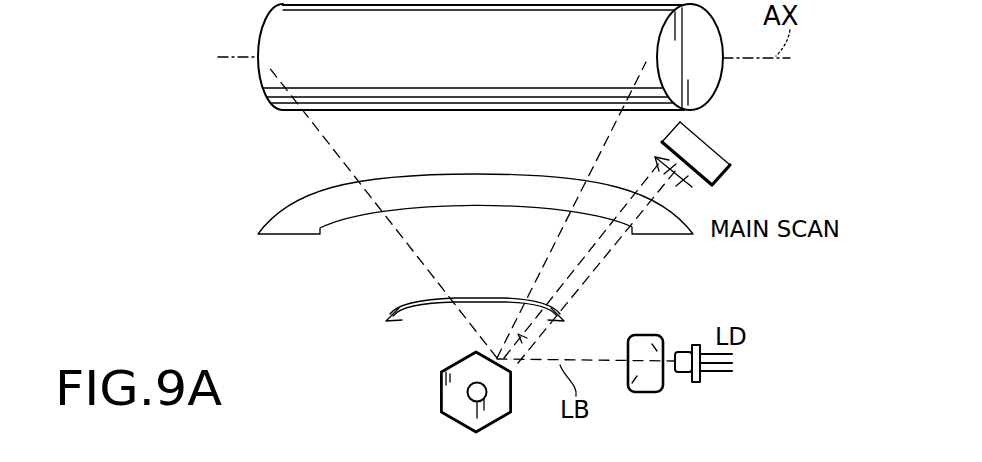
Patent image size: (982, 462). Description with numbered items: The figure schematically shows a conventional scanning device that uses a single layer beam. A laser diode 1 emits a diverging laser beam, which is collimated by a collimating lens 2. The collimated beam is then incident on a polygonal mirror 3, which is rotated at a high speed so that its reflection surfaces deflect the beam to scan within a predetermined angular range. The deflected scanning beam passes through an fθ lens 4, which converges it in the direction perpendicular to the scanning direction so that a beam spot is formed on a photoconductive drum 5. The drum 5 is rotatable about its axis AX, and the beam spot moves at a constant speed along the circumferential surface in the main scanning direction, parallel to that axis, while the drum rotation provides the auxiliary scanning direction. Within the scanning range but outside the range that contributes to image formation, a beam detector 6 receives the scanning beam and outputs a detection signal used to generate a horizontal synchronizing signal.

The laser diode 1 is at (683, 352).
The collimating lens 2 is at (633, 350).
The polygonal mirror 3 is at (450, 406).
The fθ lens 4 is at (318, 197).
The photoconductive drum 5 is at (694, 28).
The beam detector 6 is at (717, 161).